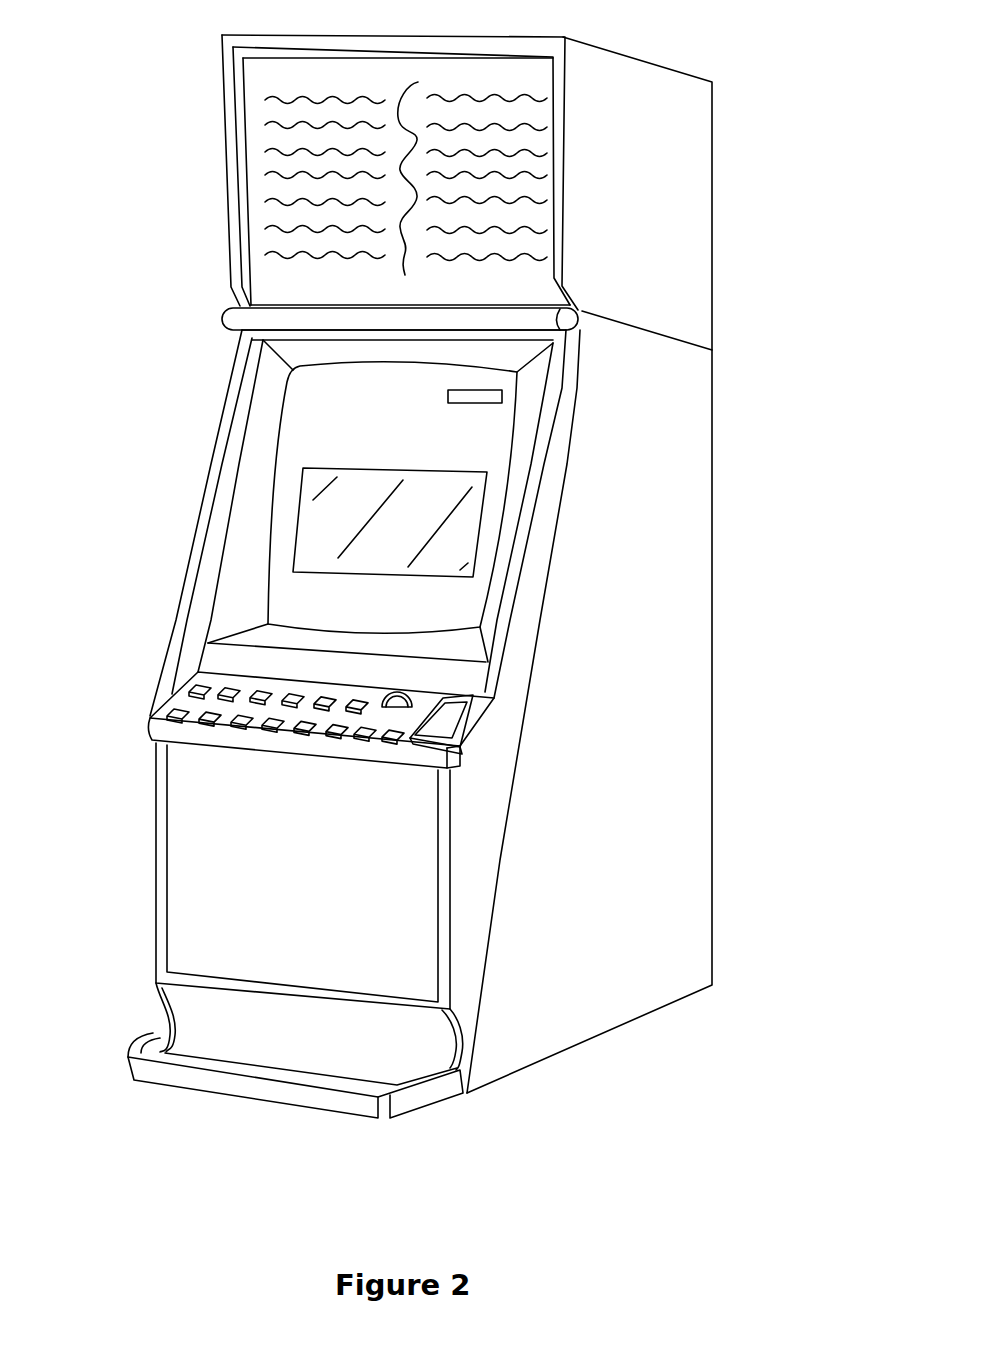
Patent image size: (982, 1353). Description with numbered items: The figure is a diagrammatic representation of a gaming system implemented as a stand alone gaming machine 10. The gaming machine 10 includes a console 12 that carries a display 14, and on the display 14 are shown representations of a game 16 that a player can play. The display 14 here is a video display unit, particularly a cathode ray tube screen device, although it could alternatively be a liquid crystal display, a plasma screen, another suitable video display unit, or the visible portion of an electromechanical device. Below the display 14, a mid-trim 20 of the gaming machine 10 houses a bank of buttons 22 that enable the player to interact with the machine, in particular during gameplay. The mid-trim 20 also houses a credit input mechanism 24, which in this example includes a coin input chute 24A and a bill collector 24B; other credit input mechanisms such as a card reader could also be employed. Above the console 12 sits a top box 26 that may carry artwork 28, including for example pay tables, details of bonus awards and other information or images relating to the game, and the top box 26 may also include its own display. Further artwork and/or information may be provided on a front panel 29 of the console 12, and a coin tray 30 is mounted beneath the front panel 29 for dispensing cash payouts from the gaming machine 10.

The gaming machine 10 is at (690, 51).
The console 12 is at (677, 537).
The display 14 is at (267, 585).
The game 16 is at (297, 525).
The mid-trim 20 is at (148, 728).
The bank of buttons 22 is at (226, 734).
The credit input mechanism 24 is at (475, 728).
The coin input chute 24A is at (412, 692).
The bill collector 24B is at (431, 732).
The top box 26 is at (228, 202).
The artwork 28 is at (281, 103).
The front panel 29 is at (194, 913).
The coin tray 30 is at (134, 1082).